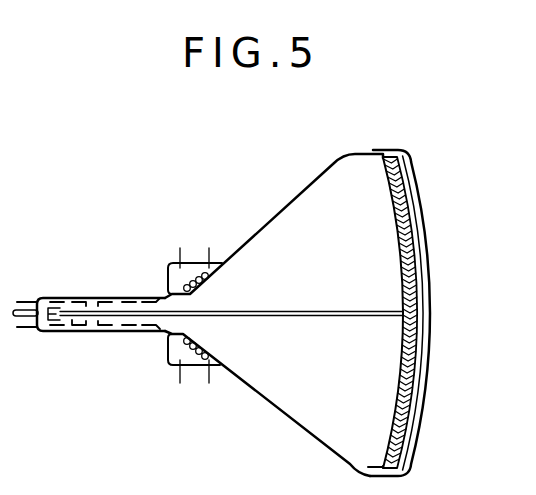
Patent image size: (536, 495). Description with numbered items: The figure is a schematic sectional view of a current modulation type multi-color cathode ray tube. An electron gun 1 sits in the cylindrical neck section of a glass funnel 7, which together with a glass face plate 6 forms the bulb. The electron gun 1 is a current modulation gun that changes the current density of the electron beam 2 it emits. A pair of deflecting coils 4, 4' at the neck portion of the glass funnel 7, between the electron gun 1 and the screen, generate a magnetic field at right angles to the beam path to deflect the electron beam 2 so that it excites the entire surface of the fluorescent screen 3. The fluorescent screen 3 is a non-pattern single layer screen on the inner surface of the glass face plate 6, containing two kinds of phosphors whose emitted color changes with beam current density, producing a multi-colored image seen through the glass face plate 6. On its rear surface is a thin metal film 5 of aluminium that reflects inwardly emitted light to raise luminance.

The electron gun 1 is at (80, 324).
The electron beam 2 is at (270, 315).
The fluorescent screen 3 is at (422, 286).
The deflecting coil 4 is at (178, 358).
The deflecting coil 4' is at (180, 265).
The thin metal film 5 is at (420, 193).
The glass face plate 6 is at (424, 358).
The glass funnel 7 is at (309, 434).